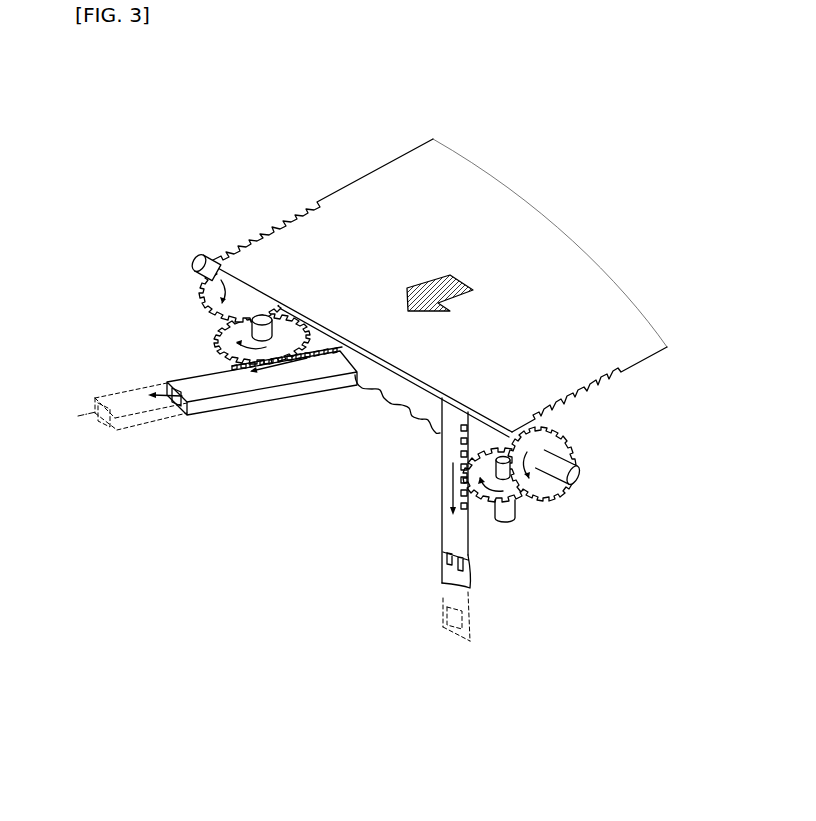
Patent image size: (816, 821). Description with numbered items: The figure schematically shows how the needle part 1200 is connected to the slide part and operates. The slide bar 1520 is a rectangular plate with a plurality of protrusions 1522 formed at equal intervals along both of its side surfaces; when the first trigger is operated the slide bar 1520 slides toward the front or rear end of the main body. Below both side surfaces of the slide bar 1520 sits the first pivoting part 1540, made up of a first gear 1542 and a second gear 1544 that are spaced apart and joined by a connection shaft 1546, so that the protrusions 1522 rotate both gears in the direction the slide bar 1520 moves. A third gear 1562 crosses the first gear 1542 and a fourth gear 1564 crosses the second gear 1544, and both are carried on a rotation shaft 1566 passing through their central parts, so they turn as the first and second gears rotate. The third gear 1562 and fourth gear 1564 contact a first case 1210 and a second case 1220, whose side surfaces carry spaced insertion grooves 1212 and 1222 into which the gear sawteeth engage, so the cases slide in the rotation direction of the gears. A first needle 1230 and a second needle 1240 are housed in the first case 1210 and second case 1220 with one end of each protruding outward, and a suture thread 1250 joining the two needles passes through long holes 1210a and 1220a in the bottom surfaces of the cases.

The needle part 1200 is at (398, 728).
The first case 1210 is at (233, 400).
The through long hole 1210a is at (172, 412).
The insertion grooves 1212 is at (232, 368).
The second case 1220 is at (446, 518).
The through long hole 1220a is at (443, 558).
The insertion grooves 1222 is at (471, 508).
The first needle 1230 is at (217, 535).
The second needle 1240 is at (421, 561).
The suture thread 1250 is at (396, 405).
The slide bar 1520 is at (440, 167).
The protrusions 1522 is at (301, 211).
The first pivoting part 1540 is at (712, 117).
The first gear 1542 is at (228, 310).
The second gear 1544 is at (555, 440).
The connection shaft 1546 is at (574, 469).
The third gear 1562 is at (220, 326).
The fourth gear 1564 is at (484, 512).
The rotation shaft 1566 is at (258, 328).